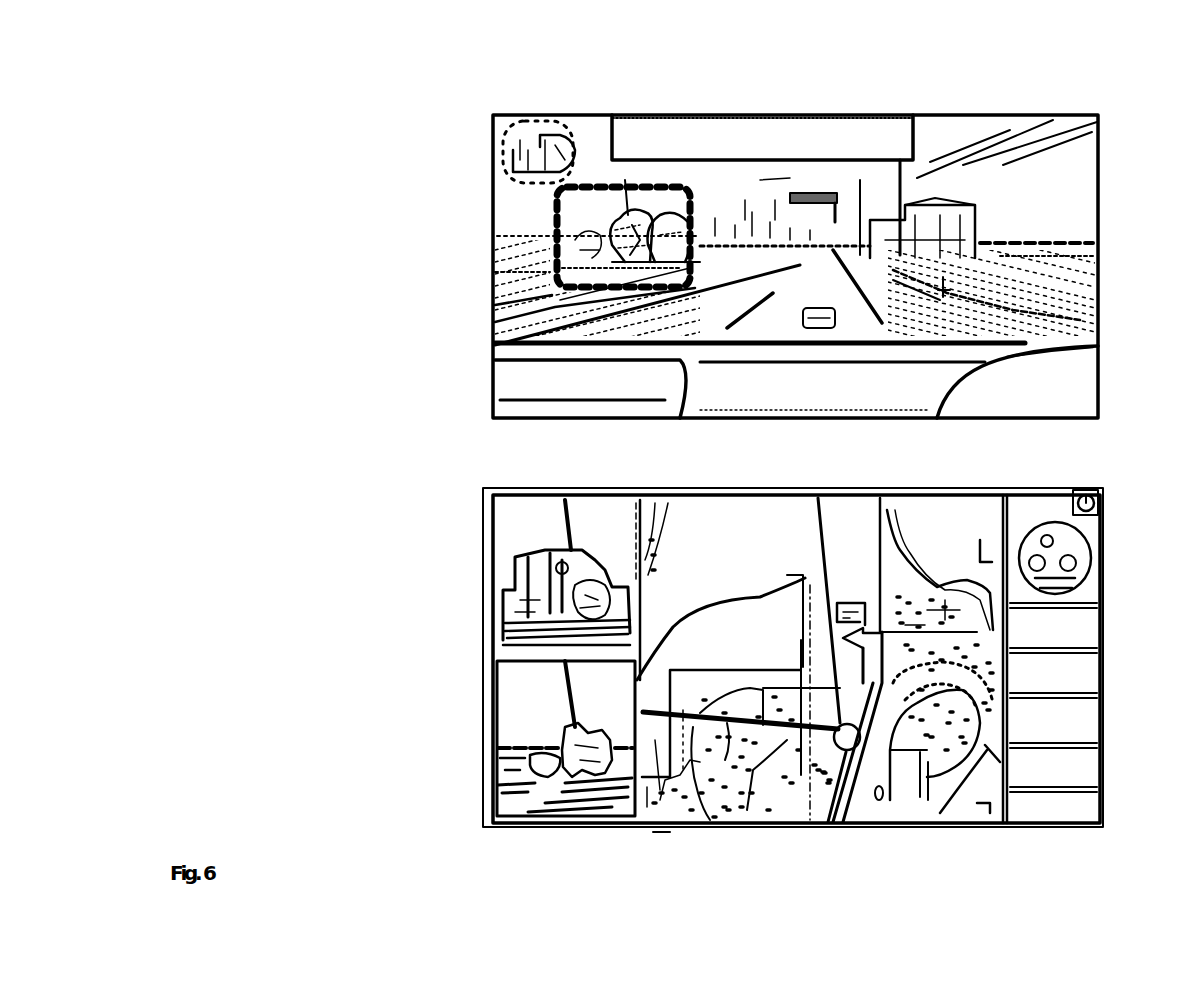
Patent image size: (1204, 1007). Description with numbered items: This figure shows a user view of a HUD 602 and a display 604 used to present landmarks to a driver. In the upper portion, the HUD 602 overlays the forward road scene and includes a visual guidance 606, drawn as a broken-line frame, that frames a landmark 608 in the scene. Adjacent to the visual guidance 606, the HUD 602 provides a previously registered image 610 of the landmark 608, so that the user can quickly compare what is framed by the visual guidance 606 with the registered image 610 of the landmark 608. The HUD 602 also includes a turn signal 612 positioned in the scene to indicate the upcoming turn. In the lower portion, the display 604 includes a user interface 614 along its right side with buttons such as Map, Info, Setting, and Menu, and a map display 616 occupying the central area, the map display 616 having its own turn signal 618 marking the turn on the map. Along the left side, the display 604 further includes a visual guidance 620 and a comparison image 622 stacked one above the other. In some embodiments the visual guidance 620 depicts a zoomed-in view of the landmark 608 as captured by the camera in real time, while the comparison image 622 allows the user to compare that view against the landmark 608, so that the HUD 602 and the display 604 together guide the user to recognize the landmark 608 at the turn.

The HUD 602 is at (537, 64).
The display 604 is at (449, 568).
The visual guidance 606 is at (548, 212).
The landmark 608 is at (662, 211).
The previously registered image 610 is at (492, 149).
The turn signal 612 is at (827, 188).
The user interface 614 is at (1107, 612).
The map display 616 is at (715, 527).
The turn signal 618 is at (861, 630).
The visual guidance 620 is at (481, 611).
The comparison image 622 is at (537, 732).